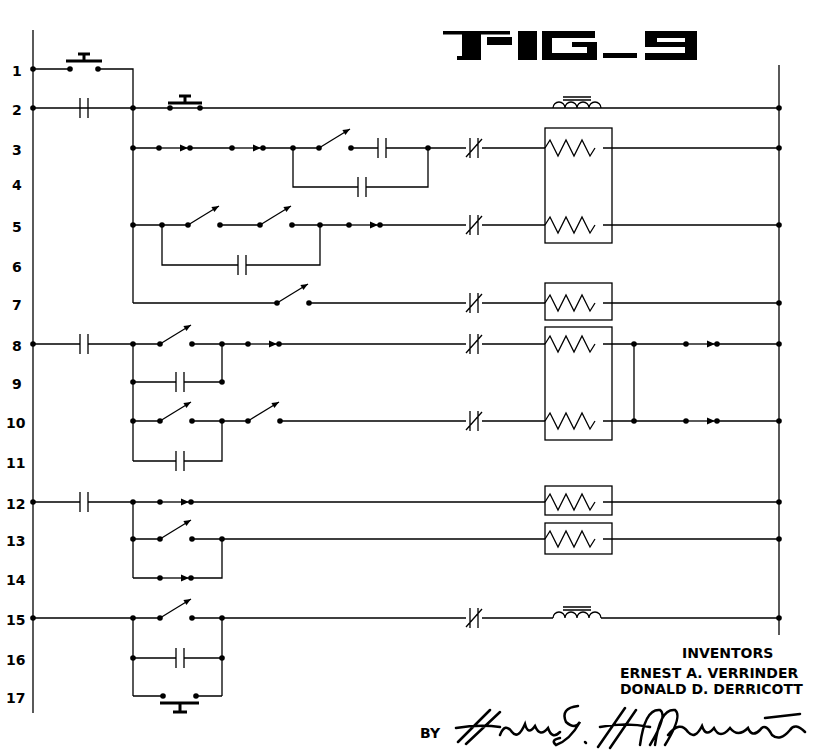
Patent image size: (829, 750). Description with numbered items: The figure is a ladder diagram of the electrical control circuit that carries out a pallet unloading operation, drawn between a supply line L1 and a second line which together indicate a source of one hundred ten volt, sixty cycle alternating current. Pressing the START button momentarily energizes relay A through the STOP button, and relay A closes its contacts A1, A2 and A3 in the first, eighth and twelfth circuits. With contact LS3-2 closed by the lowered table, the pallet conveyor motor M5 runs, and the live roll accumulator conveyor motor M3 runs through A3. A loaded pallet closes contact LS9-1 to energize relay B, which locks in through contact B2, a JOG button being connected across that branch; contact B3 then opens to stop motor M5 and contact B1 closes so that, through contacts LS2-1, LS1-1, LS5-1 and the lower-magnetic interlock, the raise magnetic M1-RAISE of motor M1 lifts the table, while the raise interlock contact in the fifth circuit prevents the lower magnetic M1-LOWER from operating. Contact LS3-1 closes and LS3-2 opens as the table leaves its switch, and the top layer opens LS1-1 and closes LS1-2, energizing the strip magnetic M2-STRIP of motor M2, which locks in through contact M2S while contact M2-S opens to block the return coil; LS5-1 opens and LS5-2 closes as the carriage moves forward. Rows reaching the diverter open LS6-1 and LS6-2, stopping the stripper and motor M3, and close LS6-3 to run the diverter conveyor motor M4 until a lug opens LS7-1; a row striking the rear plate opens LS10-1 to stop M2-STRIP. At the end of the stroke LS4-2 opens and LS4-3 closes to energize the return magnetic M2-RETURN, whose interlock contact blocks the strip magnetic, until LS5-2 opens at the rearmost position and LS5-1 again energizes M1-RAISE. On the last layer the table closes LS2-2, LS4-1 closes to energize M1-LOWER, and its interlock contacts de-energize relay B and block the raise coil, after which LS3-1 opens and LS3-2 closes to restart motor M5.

The line L1 is at (33, 361).
The start button START is at (85, 53).
The stop button STOP is at (184, 96).
The jog button JOG is at (179, 718).
The relay A is at (601, 107).
The relay B is at (605, 613).
The relay contact A1 is at (79, 100).
The relay contact A2 is at (88, 334).
The relay contact A3 is at (88, 494).
The relay contact B1 is at (381, 138).
The relay contact B2 is at (175, 656).
The relay contact B3 is at (467, 302).
The switch contact LS1-1 is at (249, 142).
The switch contact LS1-2 is at (176, 337).
The switch contact LS2-1 is at (172, 147).
The switch contact LS2-2 is at (198, 215).
The switch contact LS3-1 is at (366, 224).
The switch contact LS3-2 is at (276, 300).
The switch contact LS4-1 is at (273, 217).
The switch contact LS4-2 is at (262, 341).
The switch contact LS4-3 is at (176, 413).
The switch contact LS5-1 is at (340, 140).
The switch contact LS5-2 is at (270, 421).
The switch contact LS6-1 is at (703, 343).
The switch contact LS6-2 is at (178, 499).
The switch contact LS6-3 is at (188, 528).
The switch contact LS7-1 is at (174, 576).
The switch contact LS9-1 is at (178, 608).
The switch contact LS10-1 is at (701, 421).
The motor M1 is at (612, 182).
The raise magnetic M1-RAISE is at (597, 150).
The lower magnetic M1-LOWER is at (590, 227).
The motor M2 is at (545, 383).
The strip magnetic M2-STRIP is at (548, 348).
The return magnetic M2-RETURN is at (549, 413).
The contact M2S is at (200, 365).
The contact M2-S is at (467, 428).
The live roll accumulator conveyor motor M3 is at (612, 488).
The diverter conveyor motor M4 is at (612, 553).
The pallet conveyor motor M5 is at (612, 288).